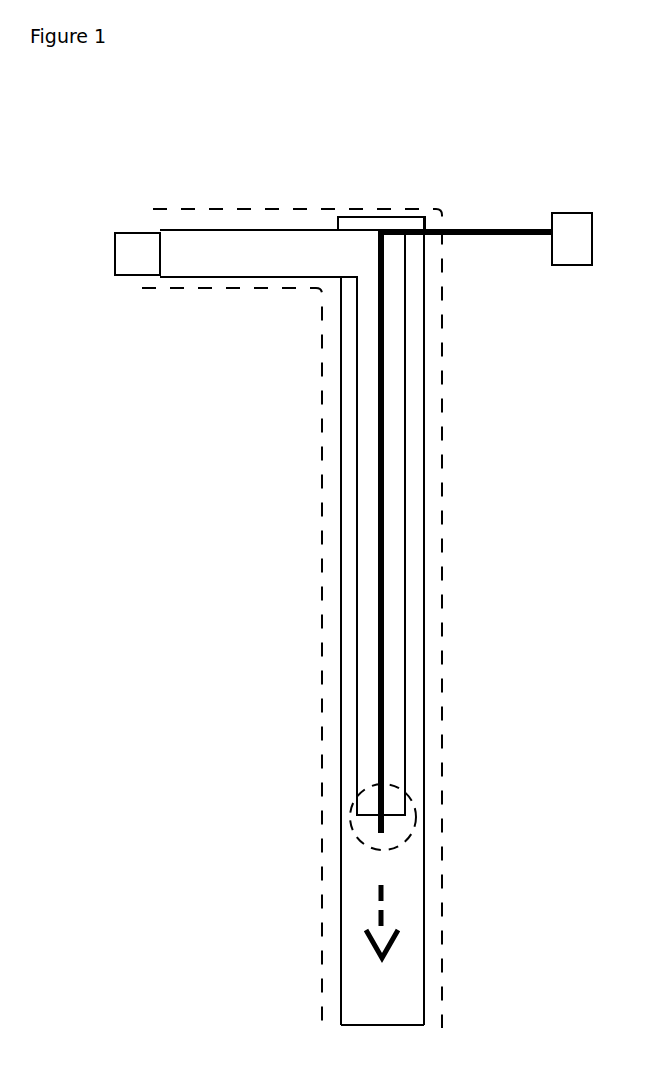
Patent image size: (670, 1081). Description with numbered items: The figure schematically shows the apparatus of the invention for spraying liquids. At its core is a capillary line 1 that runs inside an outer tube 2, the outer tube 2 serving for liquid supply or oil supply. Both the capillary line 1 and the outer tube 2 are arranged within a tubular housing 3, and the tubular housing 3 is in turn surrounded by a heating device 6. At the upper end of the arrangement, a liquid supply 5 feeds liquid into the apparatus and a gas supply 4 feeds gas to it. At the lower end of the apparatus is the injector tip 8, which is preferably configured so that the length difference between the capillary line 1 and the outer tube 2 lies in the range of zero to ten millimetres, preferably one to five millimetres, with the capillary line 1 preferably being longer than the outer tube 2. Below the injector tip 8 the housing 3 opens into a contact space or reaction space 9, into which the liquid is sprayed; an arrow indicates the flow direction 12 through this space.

The capillary line 1 is at (378, 735).
The outer tube 2 is at (357, 668).
The housing 3 is at (341, 587).
The gas supply 4 is at (592, 228).
The liquid supply 5 is at (115, 253).
The heating device 6 is at (413, 208).
The injector tip 8 is at (410, 842).
The contact space 9 is at (390, 985).
The flow direction 12 is at (378, 902).